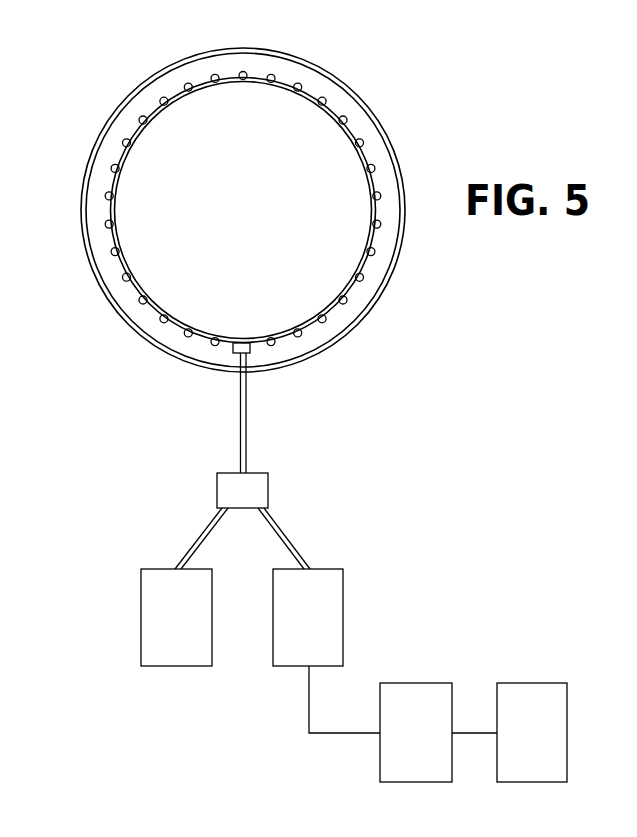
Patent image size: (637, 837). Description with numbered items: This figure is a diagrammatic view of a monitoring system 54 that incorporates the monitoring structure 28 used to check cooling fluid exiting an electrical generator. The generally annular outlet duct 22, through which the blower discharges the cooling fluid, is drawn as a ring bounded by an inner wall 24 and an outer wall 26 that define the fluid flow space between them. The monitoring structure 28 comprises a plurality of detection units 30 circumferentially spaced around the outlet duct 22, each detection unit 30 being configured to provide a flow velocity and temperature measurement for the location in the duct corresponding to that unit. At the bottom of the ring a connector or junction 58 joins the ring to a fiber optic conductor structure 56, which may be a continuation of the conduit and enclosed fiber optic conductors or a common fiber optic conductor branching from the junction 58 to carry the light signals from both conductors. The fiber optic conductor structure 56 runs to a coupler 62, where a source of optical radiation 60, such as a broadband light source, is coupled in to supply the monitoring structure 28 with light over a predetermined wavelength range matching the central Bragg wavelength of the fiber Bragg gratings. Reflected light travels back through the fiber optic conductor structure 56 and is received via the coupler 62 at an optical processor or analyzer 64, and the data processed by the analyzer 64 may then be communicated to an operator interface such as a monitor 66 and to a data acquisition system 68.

The outlet duct 22 is at (187, 62).
The inner wall 24 is at (232, 83).
The outer wall 26 is at (228, 50).
The monitoring structure 28 is at (333, 108).
The detection units 30 is at (380, 194).
The monitoring system 54 is at (187, 478).
The fiber optic conductor structure 56 is at (248, 428).
The connector or junction 58 is at (242, 342).
The source of optical radiation 60 is at (140, 622).
The coupler 62 is at (269, 490).
The optical processor or analyzer 64 is at (344, 618).
The monitor 66 is at (415, 682).
The data acquisition system 68 is at (533, 682).